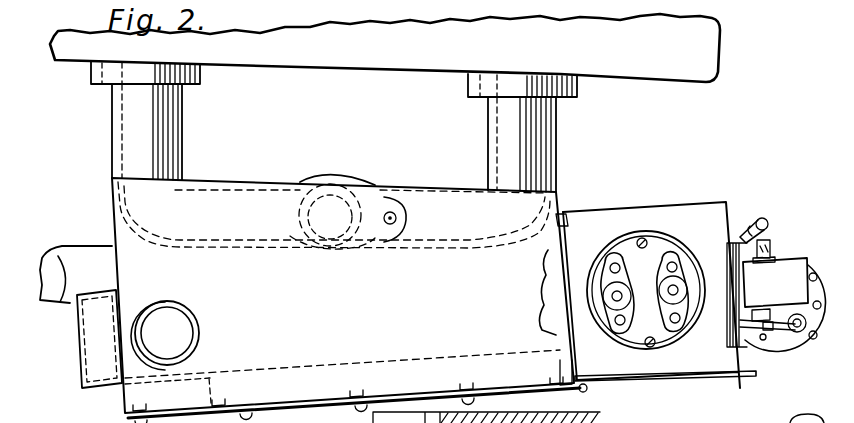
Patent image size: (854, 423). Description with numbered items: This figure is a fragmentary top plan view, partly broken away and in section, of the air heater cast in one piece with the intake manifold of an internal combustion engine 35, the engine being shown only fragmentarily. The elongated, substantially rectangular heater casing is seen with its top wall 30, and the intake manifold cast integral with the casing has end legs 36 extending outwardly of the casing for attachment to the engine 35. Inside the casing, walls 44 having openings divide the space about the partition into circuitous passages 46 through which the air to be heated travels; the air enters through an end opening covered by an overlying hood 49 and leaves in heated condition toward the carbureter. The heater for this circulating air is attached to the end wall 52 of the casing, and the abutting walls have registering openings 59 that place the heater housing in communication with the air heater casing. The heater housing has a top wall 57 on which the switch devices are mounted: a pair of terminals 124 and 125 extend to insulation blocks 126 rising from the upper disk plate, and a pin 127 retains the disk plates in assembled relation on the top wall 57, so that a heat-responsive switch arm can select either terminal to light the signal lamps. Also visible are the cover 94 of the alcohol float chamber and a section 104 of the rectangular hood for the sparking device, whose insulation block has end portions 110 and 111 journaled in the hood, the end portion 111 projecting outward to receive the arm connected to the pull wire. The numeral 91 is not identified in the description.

The top wall 30 is at (132, 257).
The internal combustion engine 35 is at (381, 60).
The end legs 36 is at (168, 147).
The walls 44 is at (565, 418).
The passages 46 is at (505, 410).
The hood 49 is at (97, 353).
The end wall 52 is at (561, 206).
The top wall 57 is at (698, 207).
The registering openings 59 is at (560, 302).
The tube 91 is at (48, 262).
The cover 94 is at (798, 343).
The hood section 104 is at (783, 272).
The end portion 110 is at (770, 233).
The end portion 111 is at (782, 292).
The terminal 124 is at (608, 275).
The terminal 125 is at (677, 288).
The insulation blocks 126 is at (670, 288).
The pin 127 is at (645, 240).